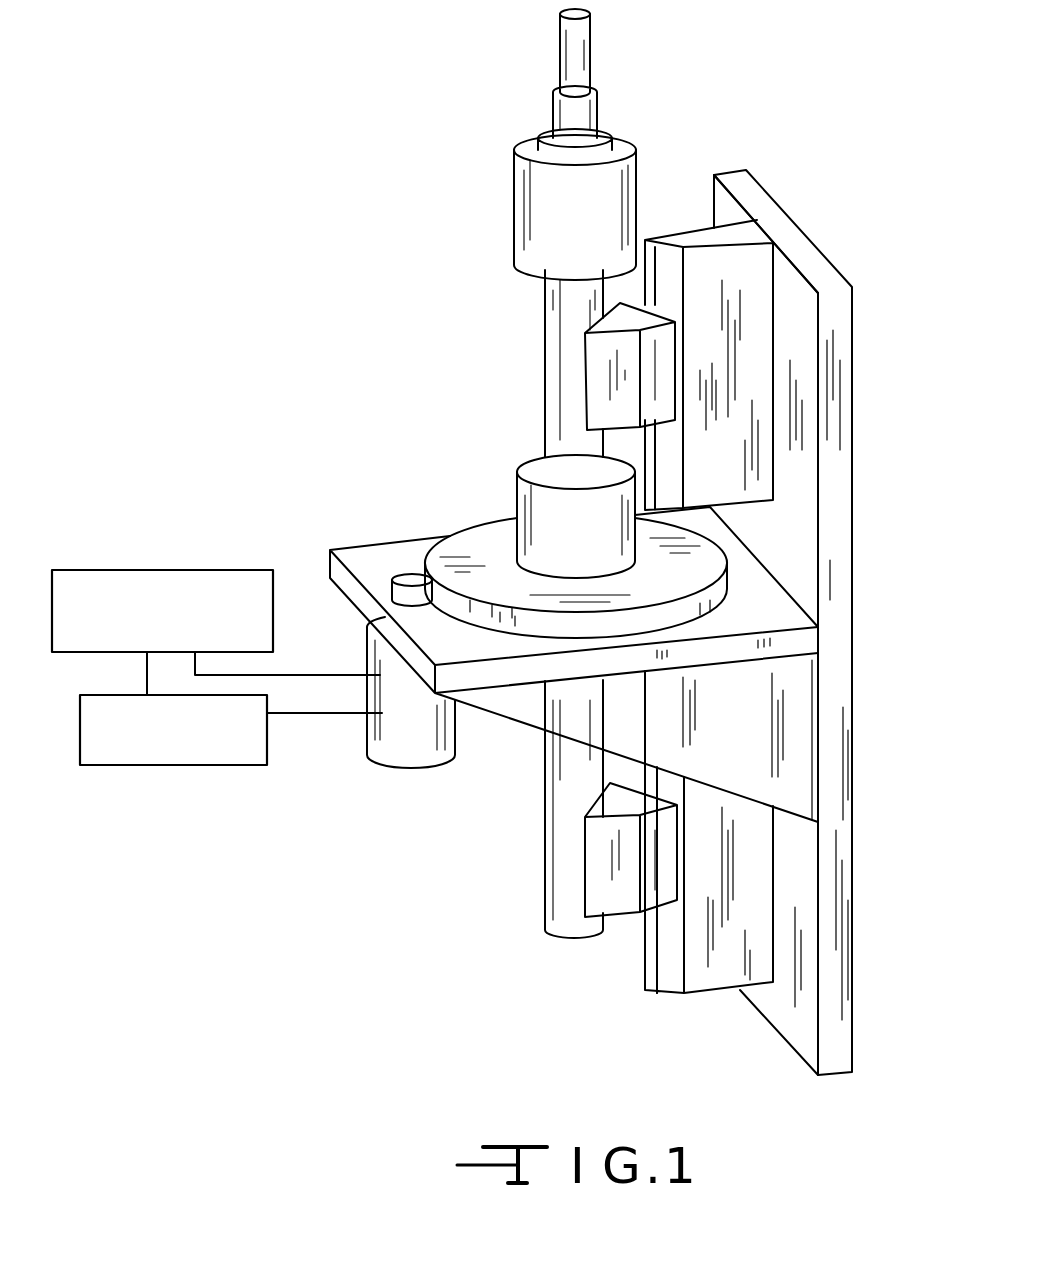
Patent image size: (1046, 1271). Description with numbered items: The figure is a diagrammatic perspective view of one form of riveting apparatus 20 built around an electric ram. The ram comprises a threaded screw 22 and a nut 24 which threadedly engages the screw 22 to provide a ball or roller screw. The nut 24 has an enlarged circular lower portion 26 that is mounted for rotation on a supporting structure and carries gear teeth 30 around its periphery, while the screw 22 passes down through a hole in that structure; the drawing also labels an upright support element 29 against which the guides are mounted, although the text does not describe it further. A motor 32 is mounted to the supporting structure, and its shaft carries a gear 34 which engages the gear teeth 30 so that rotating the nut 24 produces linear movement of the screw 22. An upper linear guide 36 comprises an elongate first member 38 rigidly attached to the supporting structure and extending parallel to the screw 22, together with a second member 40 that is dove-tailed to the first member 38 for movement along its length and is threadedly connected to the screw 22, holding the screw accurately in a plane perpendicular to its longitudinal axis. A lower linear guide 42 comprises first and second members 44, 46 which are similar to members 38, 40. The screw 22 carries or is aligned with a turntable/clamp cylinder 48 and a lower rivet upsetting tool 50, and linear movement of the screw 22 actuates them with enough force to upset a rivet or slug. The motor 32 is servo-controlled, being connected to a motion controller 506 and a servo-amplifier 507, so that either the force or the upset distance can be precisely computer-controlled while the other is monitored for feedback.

The riveting apparatus 20 is at (814, 108).
The threaded screw 22 is at (541, 830).
The nut 24 is at (511, 560).
The enlarged circular lower portion 26 is at (700, 562).
The vertical support wall 29 is at (860, 643).
The gear teeth 30 is at (526, 628).
The motor 32 is at (386, 769).
The gear 34 is at (390, 570).
The upper linear guide 36 is at (726, 300).
The first member 38 is at (686, 445).
The second member 40 is at (588, 377).
The lower linear guide 42 is at (730, 862).
The first member 44 is at (646, 1000).
The second member 46 is at (623, 918).
The turntable/clamp cylinder 48 is at (638, 186).
The lower rivet upsetting tool 50 is at (593, 55).
The motion controller 506 is at (166, 566).
The servo-amplifier 507 is at (190, 769).